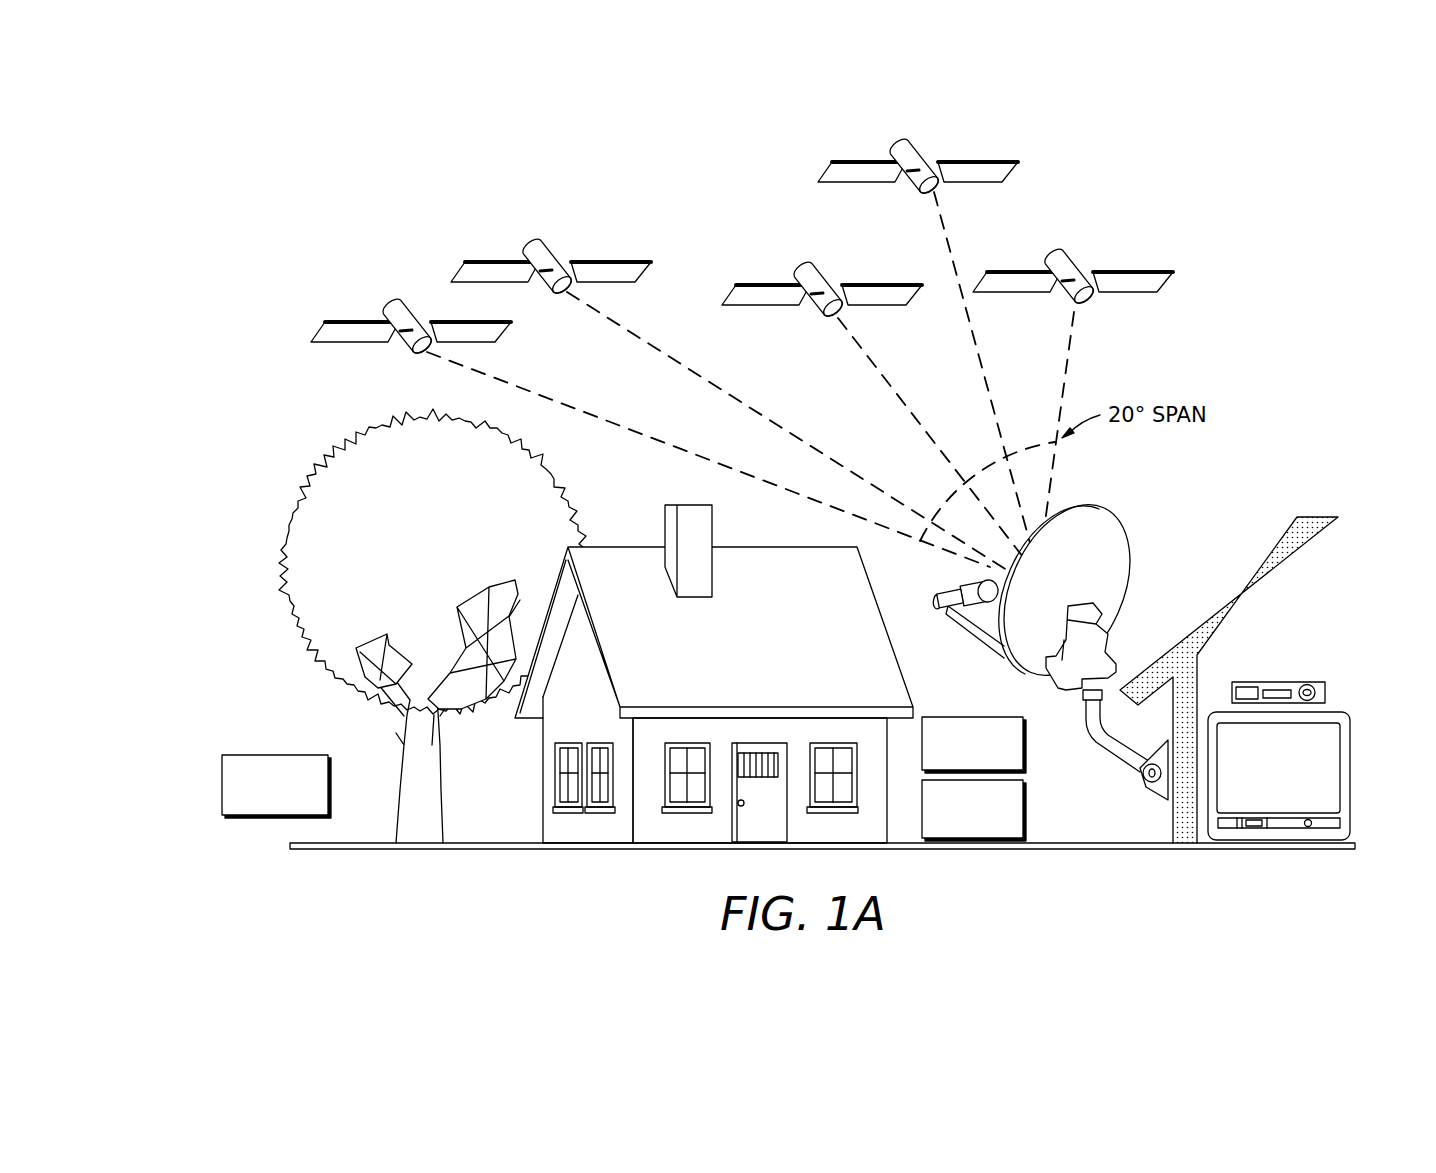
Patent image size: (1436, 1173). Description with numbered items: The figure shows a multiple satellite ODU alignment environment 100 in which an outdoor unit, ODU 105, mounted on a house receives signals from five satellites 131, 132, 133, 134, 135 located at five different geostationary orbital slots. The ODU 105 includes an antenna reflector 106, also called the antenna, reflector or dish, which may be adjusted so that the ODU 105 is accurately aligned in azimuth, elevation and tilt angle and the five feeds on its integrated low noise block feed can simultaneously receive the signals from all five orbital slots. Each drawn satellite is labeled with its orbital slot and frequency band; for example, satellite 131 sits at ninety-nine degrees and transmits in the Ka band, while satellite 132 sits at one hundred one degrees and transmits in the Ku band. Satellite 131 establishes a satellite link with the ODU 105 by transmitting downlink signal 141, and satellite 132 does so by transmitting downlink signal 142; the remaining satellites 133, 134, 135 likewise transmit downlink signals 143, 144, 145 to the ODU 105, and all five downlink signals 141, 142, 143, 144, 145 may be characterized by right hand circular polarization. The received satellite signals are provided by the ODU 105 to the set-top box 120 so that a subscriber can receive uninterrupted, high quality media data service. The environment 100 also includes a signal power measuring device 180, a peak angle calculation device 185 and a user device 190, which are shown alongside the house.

The ODU alignment environment 100 is at (228, 228).
The satellite 131 is at (328, 343).
The satellite 132 is at (613, 262).
The satellite 133 is at (867, 285).
The satellite 134 is at (997, 162).
The satellite 135 is at (1143, 293).
The downlink signal 141 is at (512, 384).
The downlink signal 142 is at (677, 361).
The downlink signal 143 is at (855, 340).
The downlink signal 144 is at (980, 362).
The downlink signal 145 is at (1067, 362).
The ODU 105 is at (1064, 642).
The antenna reflector 106 is at (1128, 532).
The set-top box 120 is at (1318, 682).
The signal power measuring device 180 is at (1025, 748).
The user device 190 is at (1025, 808).
The peak angle calculation device 185 is at (330, 787).